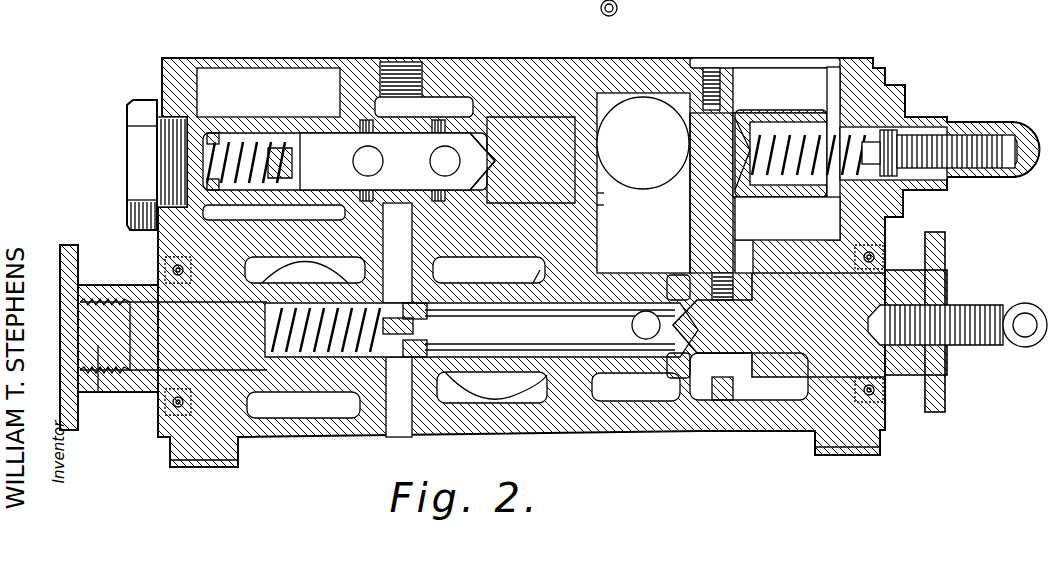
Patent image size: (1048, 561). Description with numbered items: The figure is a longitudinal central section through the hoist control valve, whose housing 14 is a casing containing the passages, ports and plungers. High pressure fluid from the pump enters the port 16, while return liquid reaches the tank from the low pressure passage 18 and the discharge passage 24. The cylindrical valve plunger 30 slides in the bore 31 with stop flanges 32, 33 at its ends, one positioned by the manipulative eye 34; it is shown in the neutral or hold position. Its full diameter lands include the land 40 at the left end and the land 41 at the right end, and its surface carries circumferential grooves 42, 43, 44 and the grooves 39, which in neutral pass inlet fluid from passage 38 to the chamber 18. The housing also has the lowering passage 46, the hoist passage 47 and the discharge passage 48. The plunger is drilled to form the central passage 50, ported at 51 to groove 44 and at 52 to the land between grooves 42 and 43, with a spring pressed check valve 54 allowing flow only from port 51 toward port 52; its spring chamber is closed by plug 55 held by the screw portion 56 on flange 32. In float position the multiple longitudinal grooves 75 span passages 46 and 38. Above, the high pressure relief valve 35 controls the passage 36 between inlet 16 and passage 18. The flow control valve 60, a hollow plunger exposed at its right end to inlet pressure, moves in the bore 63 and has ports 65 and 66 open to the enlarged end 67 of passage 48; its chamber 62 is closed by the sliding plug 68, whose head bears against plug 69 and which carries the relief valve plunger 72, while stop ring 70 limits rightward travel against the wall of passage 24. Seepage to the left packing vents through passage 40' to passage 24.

The housing 14 is at (884, 424).
The port 16 is at (643, 143).
The low pressure passage 18 is at (813, 66).
The discharge passage 24 is at (224, 92).
The valve plunger 30 is at (920, 284).
The bore 31 is at (674, 206).
The stop flange 32 is at (70, 250).
The stop flange 33 is at (946, 398).
The manipulative eye 34 is at (1025, 303).
The high pressure relief valve 35 is at (782, 122).
The passage 36 is at (690, 163).
The passage 38 is at (643, 183).
The grooves 39 is at (757, 404).
The land 40 is at (111, 337).
The passage 40' is at (152, 260).
The land 41 is at (815, 275).
The circumferential groove 42 is at (272, 405).
The circumferential groove 43 is at (470, 400).
The circumferential groove 44 is at (672, 374).
The lowering passage 46 is at (489, 270).
The hoist passage 47 is at (280, 262).
The discharge passage 48 is at (396, 250).
The central passage 50 is at (481, 330).
The port 51 is at (646, 325).
The port 52 is at (399, 437).
The check valve 54 is at (430, 336).
The plug 55 is at (160, 362).
The screw portion 56 is at (98, 392).
The flow control valve 60 is at (603, 194).
The chamber 62 is at (389, 160).
The bore 63 is at (603, 206).
The ports 65 is at (385, 122).
The ports 66 is at (447, 122).
The enlarged end 67 is at (448, 198).
The plug 68 is at (258, 190).
The plug 69 is at (135, 178).
The stop ring 70 is at (334, 112).
The relief valve plunger 72 is at (268, 148).
The longitudinal grooves 75 is at (527, 278).